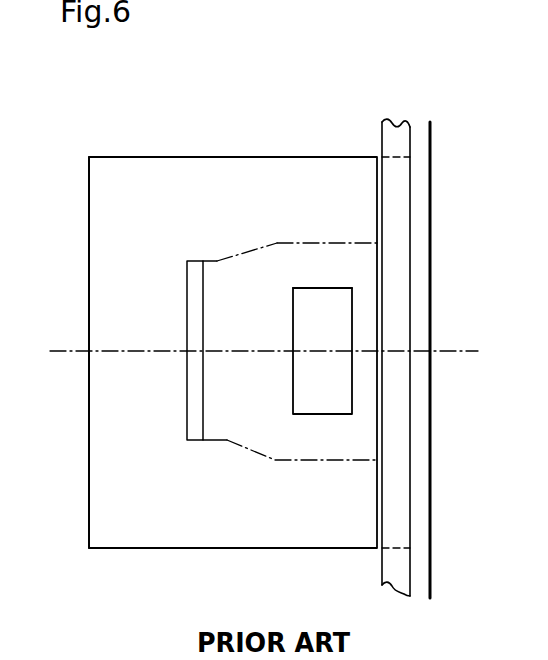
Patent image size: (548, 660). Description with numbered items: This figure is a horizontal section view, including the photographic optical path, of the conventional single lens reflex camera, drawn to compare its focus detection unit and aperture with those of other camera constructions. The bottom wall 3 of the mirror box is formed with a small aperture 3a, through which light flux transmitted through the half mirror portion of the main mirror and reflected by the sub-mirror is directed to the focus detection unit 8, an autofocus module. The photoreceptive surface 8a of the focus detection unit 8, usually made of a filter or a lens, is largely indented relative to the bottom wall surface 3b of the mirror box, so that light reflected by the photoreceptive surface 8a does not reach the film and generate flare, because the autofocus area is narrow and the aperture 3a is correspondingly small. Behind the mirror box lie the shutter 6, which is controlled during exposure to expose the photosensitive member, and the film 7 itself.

The bottom wall of mirror box 3 is at (147, 157).
The aperture 3a is at (313, 287).
The bottom wall surface of mirror box 3b is at (119, 195).
The shutter 6 is at (395, 137).
The film 7 is at (432, 130).
The focus detection unit 8 is at (219, 261).
The photoreceptive surface of focus detection unit 8a is at (325, 407).